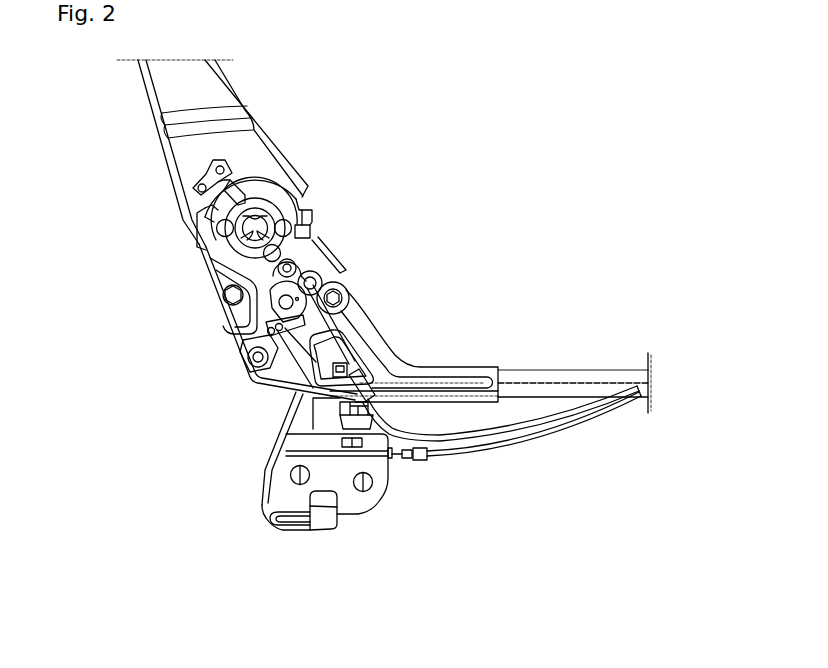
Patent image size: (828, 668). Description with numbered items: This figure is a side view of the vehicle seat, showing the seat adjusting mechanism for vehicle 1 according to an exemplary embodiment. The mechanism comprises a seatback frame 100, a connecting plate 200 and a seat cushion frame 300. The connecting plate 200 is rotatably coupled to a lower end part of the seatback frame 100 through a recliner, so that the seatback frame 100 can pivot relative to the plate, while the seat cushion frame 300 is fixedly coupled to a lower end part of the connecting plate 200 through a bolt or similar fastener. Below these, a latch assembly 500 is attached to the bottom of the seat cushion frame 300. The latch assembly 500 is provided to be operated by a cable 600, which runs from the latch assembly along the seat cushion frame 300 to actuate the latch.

The seat adjusting mechanism for vehicle 1 is at (147, 241).
The seatback frame 100 is at (158, 96).
The connecting plate 200 is at (217, 322).
The seat cushion frame 300 is at (286, 379).
The latch assembly 500 is at (273, 518).
The cable 600 is at (531, 440).